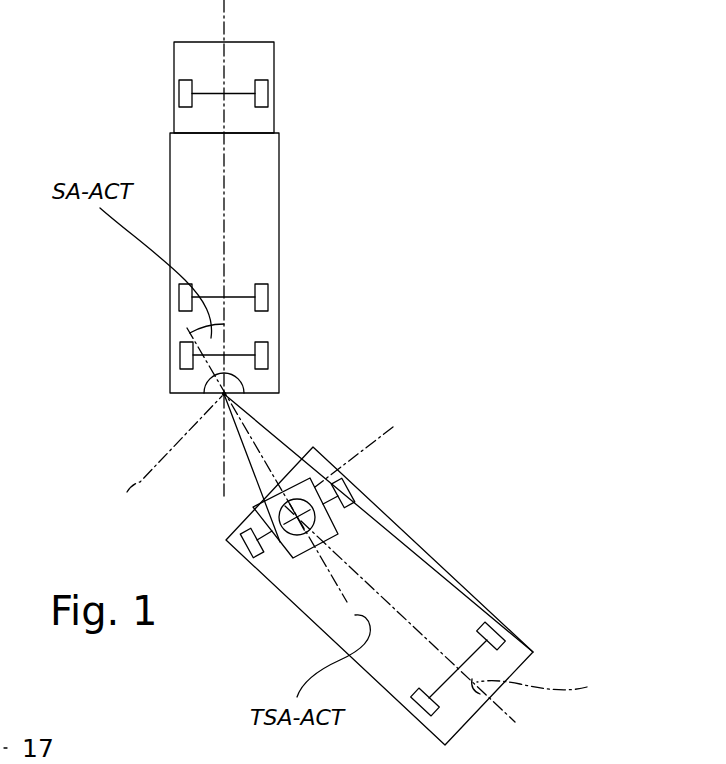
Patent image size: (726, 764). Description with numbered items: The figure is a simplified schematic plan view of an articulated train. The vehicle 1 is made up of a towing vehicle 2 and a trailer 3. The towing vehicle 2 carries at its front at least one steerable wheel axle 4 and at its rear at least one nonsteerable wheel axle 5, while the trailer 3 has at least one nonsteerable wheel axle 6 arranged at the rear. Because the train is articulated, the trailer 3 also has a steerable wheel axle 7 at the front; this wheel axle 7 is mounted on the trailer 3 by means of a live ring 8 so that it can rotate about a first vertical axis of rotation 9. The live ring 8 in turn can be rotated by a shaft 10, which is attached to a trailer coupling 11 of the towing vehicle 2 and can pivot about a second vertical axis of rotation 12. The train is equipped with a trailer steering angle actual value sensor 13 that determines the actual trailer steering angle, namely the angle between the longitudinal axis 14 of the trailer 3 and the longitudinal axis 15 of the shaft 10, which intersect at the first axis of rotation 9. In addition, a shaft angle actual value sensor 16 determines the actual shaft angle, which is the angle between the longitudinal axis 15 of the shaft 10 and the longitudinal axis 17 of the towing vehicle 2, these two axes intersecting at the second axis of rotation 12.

The vehicle 1 is at (292, 217).
The towing vehicle 2 is at (272, 236).
The trailer 3 is at (398, 530).
The steerable wheel axle 4 is at (166, 79).
The nonsteerable wheel axle 5 is at (163, 296).
The nonsteerable wheel axle 6 is at (505, 618).
The steerable wheel axle 7 is at (366, 490).
The live ring 8 is at (280, 546).
The first vertical axis of rotation 9 is at (360, 443).
The shaft 10 is at (277, 437).
The trailer coupling 11 is at (222, 396).
The second vertical axis of rotation 12 is at (154, 449).
The trailer steering angle actual value sensor 13 is at (450, 574).
The longitudinal axis of the trailer 14 is at (542, 674).
The longitudinal axis of the shaft 15 is at (348, 603).
The shaft angle actual value sensor 16 is at (243, 382).
The longitudinal axis of the towing vehicle 17 is at (217, 178).